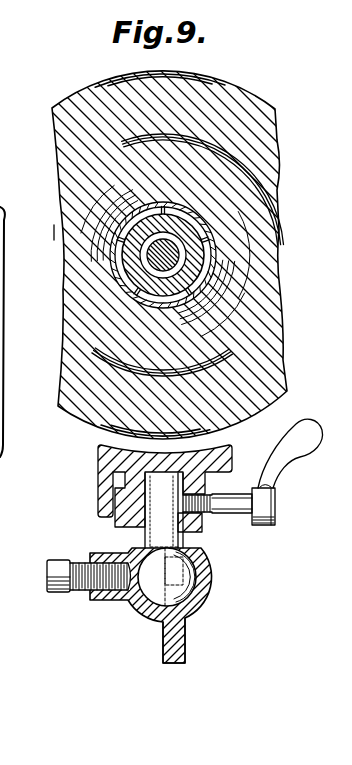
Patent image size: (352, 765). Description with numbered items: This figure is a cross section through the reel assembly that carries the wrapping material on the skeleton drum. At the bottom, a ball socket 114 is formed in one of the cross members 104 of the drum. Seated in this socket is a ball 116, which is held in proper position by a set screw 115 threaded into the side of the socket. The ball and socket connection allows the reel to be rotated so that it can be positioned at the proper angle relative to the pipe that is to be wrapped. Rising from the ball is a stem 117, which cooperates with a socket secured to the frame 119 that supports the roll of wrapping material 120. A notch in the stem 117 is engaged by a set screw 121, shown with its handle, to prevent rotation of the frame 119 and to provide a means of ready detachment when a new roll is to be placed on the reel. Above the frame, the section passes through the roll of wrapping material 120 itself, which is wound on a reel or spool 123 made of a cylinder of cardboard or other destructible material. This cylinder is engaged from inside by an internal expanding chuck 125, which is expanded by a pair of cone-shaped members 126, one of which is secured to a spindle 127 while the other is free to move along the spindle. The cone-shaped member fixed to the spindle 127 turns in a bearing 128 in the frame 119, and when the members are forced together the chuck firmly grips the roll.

The cross member 104 is at (187, 652).
The ball socket 114 is at (142, 612).
The set screw 115 is at (58, 595).
The ball 116 is at (190, 578).
The stem 117 is at (158, 520).
The frame 119 is at (98, 466).
The roll of wrapping material 120 is at (230, 95).
The set screw 121 is at (215, 515).
The reel or spool 123 is at (117, 288).
The internal expanding chuck 125 is at (120, 261).
The cone-shaped member 126 is at (0, 173).
The spindle 127 is at (173, 255).
The bearing 128 is at (54, 232).